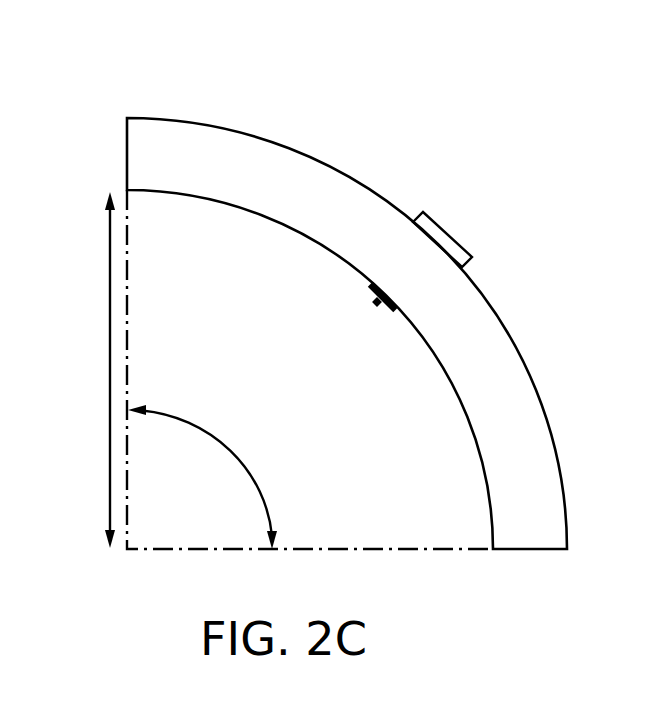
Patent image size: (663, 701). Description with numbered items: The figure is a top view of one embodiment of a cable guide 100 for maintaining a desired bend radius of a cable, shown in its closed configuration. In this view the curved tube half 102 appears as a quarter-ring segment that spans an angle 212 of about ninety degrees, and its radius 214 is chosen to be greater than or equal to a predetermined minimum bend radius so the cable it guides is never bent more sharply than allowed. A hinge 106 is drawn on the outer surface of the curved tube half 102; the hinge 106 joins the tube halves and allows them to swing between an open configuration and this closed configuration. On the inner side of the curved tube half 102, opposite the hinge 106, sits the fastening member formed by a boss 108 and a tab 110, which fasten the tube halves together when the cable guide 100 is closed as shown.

The cable guide 100 is at (347, 291).
The curved tube half 102 is at (305, 182).
The hinge 106 is at (448, 232).
The boss 108 is at (377, 303).
The tab 110 is at (370, 288).
The angle 212 is at (224, 442).
The radius 214 is at (110, 332).